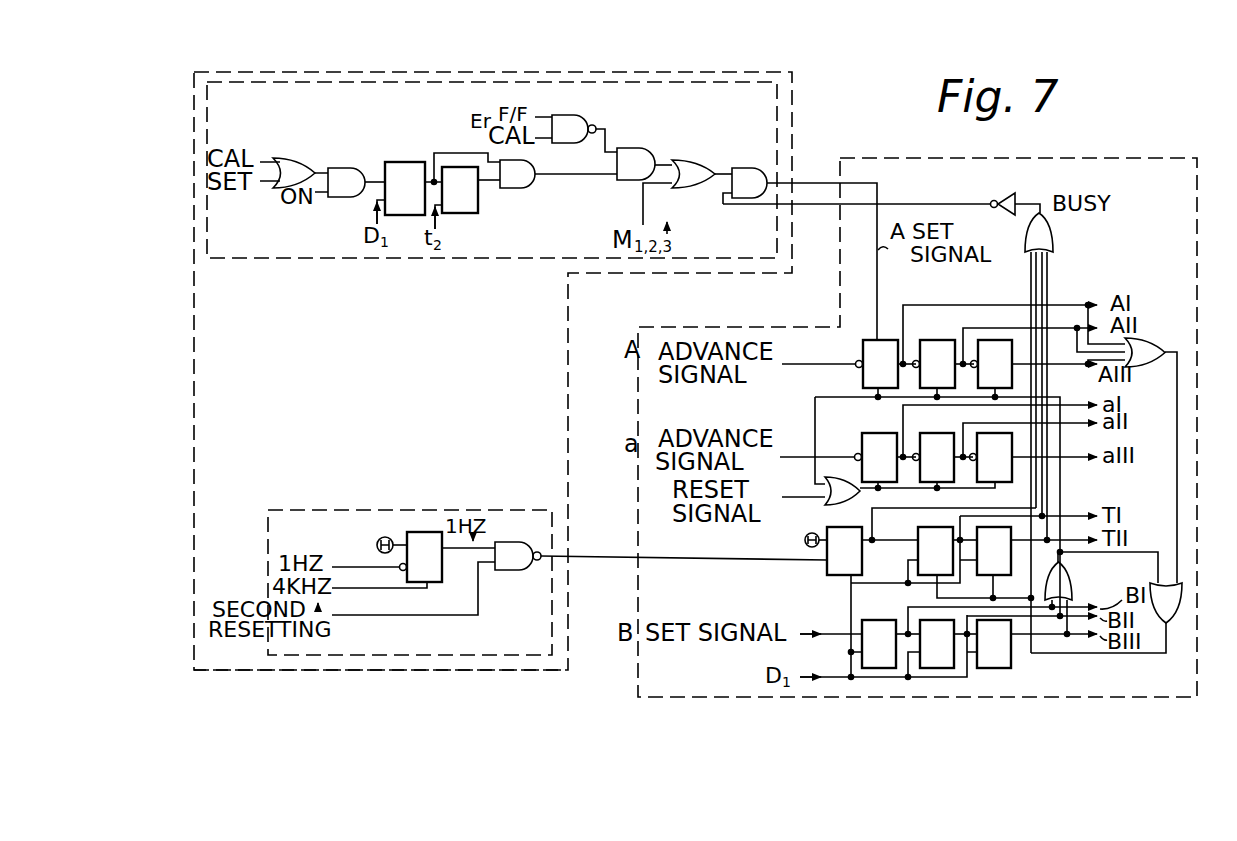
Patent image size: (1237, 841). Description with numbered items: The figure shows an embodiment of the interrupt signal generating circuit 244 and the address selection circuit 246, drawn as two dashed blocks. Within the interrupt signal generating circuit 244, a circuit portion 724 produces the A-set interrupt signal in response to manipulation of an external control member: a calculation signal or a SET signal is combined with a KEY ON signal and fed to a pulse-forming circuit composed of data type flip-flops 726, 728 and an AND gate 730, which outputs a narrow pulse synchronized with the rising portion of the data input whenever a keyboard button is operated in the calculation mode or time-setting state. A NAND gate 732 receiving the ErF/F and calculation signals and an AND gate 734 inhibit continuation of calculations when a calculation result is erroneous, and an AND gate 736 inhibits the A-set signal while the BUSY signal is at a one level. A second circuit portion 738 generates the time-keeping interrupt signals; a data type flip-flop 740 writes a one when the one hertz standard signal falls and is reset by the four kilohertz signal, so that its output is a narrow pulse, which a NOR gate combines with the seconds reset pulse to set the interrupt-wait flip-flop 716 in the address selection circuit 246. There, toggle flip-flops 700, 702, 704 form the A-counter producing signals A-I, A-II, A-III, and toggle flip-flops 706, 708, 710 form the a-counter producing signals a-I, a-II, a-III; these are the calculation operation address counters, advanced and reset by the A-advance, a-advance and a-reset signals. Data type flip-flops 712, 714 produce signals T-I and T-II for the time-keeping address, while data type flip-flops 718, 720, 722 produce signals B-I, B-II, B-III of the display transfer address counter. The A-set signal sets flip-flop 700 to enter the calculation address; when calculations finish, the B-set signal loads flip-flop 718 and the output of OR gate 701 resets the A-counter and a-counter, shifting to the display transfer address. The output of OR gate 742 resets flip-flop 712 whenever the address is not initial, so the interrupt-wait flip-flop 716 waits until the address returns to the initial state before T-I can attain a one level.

The circuit portion 724 is at (252, 73).
The data type flip-flop 726 is at (398, 162).
The data type flip-flop 728 is at (463, 213).
The AND gate 730 is at (518, 188).
The NAND gate 732 is at (566, 143).
The AND gate 734 is at (623, 180).
The AND gate 736 is at (742, 168).
The circuit portion 738 is at (436, 512).
The data type flip-flop 740 is at (442, 568).
The interrupt signal generating circuit 244 is at (388, 672).
The address selection circuit 246 is at (1112, 145).
The toggle flip-flop 700 is at (883, 338).
The toggle flip-flop 702 is at (938, 338).
The toggle flip-flop 704 is at (990, 338).
The toggle flip-flop 706 is at (862, 440).
The toggle flip-flop 708 is at (920, 440).
The toggle flip-flop 710 is at (1012, 474).
The data type flip-flop 712 is at (923, 527).
The data type flip-flop 714 is at (1012, 560).
The interrupt-wait flip-flop 716 is at (827, 570).
The data type flip-flop 718 is at (876, 668).
The data type flip-flop 720 is at (940, 668).
The data type flip-flop 722 is at (997, 668).
The OR gate 701 is at (1072, 585).
The OR gate 742 is at (1188, 600).